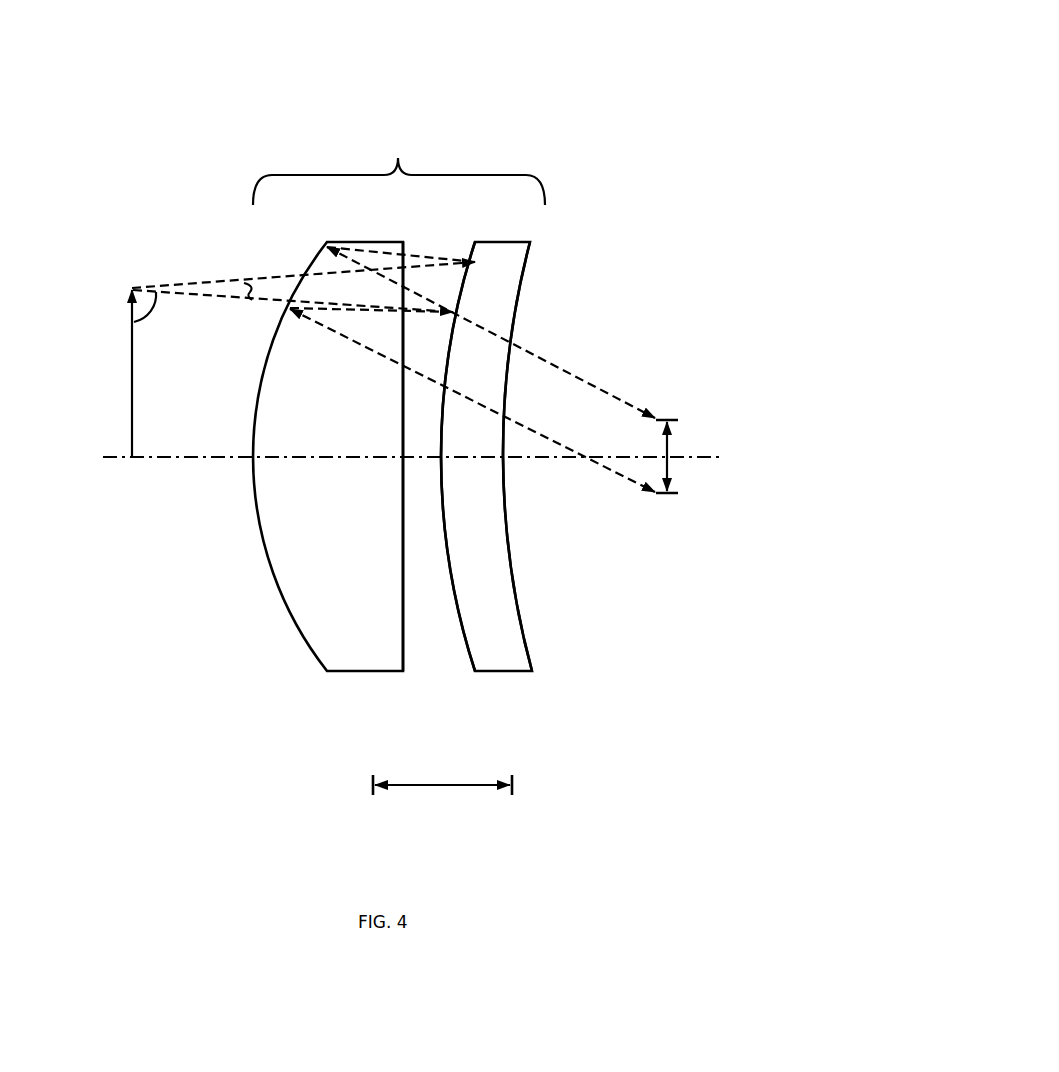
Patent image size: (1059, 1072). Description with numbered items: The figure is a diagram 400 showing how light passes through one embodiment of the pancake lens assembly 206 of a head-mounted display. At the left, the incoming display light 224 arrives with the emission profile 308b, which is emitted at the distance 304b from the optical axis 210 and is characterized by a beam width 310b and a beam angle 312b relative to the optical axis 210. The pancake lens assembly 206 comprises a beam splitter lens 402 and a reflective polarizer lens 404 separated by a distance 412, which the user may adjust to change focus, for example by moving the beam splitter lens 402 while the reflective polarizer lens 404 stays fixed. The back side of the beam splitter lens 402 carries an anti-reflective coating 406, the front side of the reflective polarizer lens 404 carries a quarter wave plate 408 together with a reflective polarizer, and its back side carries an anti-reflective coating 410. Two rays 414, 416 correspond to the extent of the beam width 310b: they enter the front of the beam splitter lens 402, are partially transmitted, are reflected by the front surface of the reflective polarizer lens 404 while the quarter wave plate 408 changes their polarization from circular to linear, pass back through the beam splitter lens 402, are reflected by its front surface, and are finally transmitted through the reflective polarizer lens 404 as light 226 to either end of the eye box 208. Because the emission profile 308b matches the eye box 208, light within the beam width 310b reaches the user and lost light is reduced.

The diagram 400 is at (848, 88).
The display light 224 is at (87, 232).
The distance 304b is at (132, 352).
The emission profile 308b is at (165, 275).
The beam width 310b is at (249, 302).
The beam angle 312b is at (138, 322).
The optical axis 210 is at (172, 462).
The pancake lens assembly 206 is at (415, 443).
The beam splitter lens 402 is at (360, 658).
The reflective polarizer lens 404 is at (506, 662).
The anti-reflective coating 406 is at (406, 641).
The quarter wave plate 408 is at (462, 631).
The anti-reflective coating 410 is at (526, 618).
The distance 412 is at (490, 790).
The light 226 is at (598, 318).
The eye box 208 is at (670, 436).
The ray 414 is at (614, 400).
The ray 416 is at (612, 478).